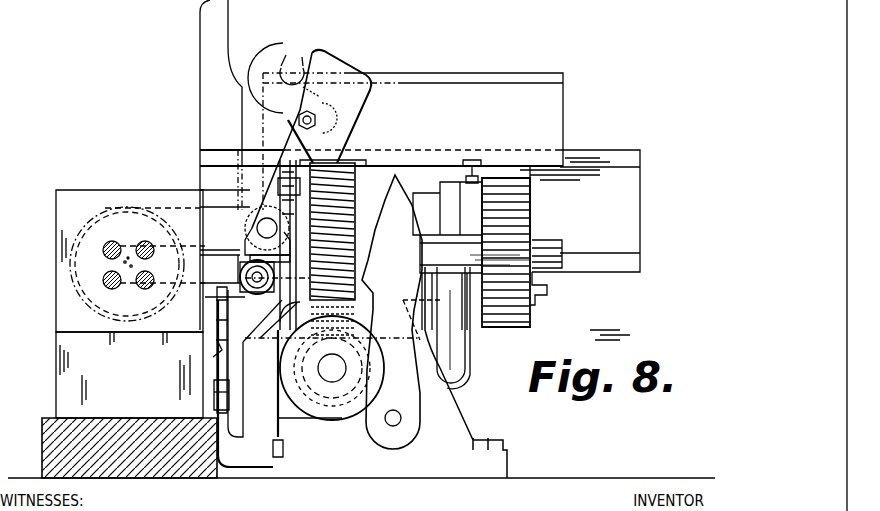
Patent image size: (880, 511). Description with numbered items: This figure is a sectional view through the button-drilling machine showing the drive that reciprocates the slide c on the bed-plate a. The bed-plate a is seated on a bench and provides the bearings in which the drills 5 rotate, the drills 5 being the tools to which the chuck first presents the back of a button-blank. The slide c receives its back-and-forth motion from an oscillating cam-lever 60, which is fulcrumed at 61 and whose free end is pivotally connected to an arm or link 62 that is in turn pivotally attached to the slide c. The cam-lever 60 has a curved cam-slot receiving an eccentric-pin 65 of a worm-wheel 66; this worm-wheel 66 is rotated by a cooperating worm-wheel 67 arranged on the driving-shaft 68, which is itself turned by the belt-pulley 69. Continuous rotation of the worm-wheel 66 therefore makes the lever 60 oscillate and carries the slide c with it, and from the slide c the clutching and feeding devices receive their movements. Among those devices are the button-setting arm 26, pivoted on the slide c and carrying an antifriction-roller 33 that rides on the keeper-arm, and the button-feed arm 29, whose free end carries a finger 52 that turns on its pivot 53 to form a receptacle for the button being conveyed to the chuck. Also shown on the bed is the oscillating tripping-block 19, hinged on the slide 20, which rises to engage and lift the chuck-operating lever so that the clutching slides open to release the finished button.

The drills 5 is at (145, 240).
The tripping-block 19 is at (213, 357).
The slide 20 is at (213, 393).
The button-setting arm 26 is at (243, 277).
The button-feed arm 29 is at (311, 139).
The antifriction-roller 33 is at (243, 252).
The finger 52 is at (271, 58).
The pivot 53 is at (442, 396).
The cam-lever 60 is at (257, 377).
The fulcrum 61 is at (284, 452).
The arm or link 62 is at (288, 203).
The eccentric-pin 65 is at (310, 172).
The worm-wheel 66 is at (355, 187).
The worm-wheel 67 is at (342, 408).
The driving-shaft 68 is at (332, 368).
The belt-pulley 69 is at (333, 413).
The bed-plate a is at (48, 450).
The slide C is at (342, 312).